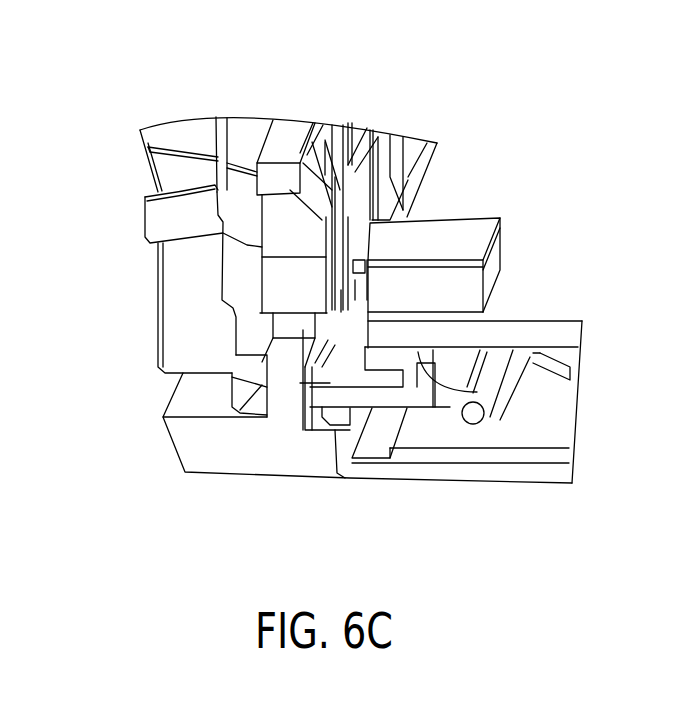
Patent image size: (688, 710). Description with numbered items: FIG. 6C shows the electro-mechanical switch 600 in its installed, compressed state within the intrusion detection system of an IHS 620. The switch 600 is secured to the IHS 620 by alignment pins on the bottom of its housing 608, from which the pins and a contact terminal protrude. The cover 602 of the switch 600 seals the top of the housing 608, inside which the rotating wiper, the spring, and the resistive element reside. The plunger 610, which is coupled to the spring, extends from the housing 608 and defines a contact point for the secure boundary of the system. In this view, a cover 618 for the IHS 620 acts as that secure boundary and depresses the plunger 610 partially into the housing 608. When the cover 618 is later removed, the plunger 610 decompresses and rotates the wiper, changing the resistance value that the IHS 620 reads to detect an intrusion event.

The electro-mechanical switch 600 is at (445, 203).
The cover 602 is at (428, 232).
The housing 608 is at (467, 322).
The plunger 610 is at (359, 300).
The cover 618 is at (344, 310).
The IHS 620 is at (102, 104).